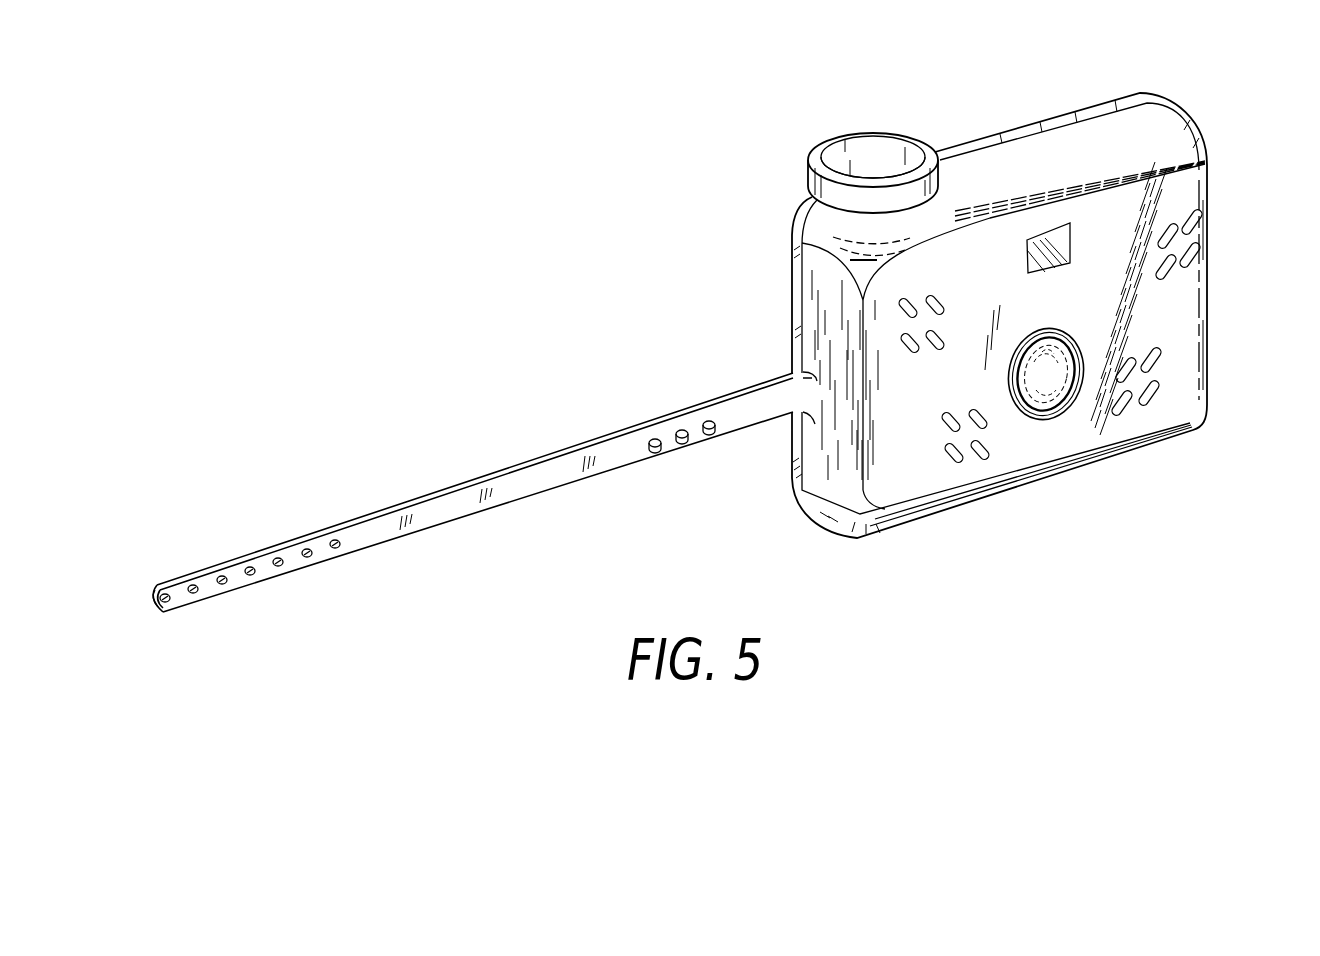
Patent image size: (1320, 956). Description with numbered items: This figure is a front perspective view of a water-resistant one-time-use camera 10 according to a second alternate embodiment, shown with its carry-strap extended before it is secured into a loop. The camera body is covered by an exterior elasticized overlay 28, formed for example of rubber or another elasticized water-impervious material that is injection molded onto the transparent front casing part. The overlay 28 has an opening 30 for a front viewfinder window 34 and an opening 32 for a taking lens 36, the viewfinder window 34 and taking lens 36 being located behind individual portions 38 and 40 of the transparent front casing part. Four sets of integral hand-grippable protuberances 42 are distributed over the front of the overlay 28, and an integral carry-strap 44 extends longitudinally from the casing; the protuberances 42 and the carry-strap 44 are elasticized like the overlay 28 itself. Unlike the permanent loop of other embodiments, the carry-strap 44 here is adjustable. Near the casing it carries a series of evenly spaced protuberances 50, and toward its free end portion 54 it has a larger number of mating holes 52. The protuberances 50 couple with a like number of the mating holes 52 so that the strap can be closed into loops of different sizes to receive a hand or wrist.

The water-resistant one-time-use camera 10 is at (766, 144).
The exterior elasticized overlay 28 is at (1183, 328).
The opening 30 is at (1071, 236).
The opening 32 is at (1050, 347).
The front viewfinder window 34 is at (1038, 240).
The taking lens 36 is at (1063, 390).
The portion of transparent front casing part 38 is at (1052, 236).
The portion of transparent front casing part 40 is at (1042, 404).
The hand-grippable protuberances 42 is at (1198, 258).
The carry-strap 44 is at (560, 455).
The protuberances 50 is at (710, 431).
The mating holes 52 is at (338, 548).
The free end portion 54 is at (158, 588).